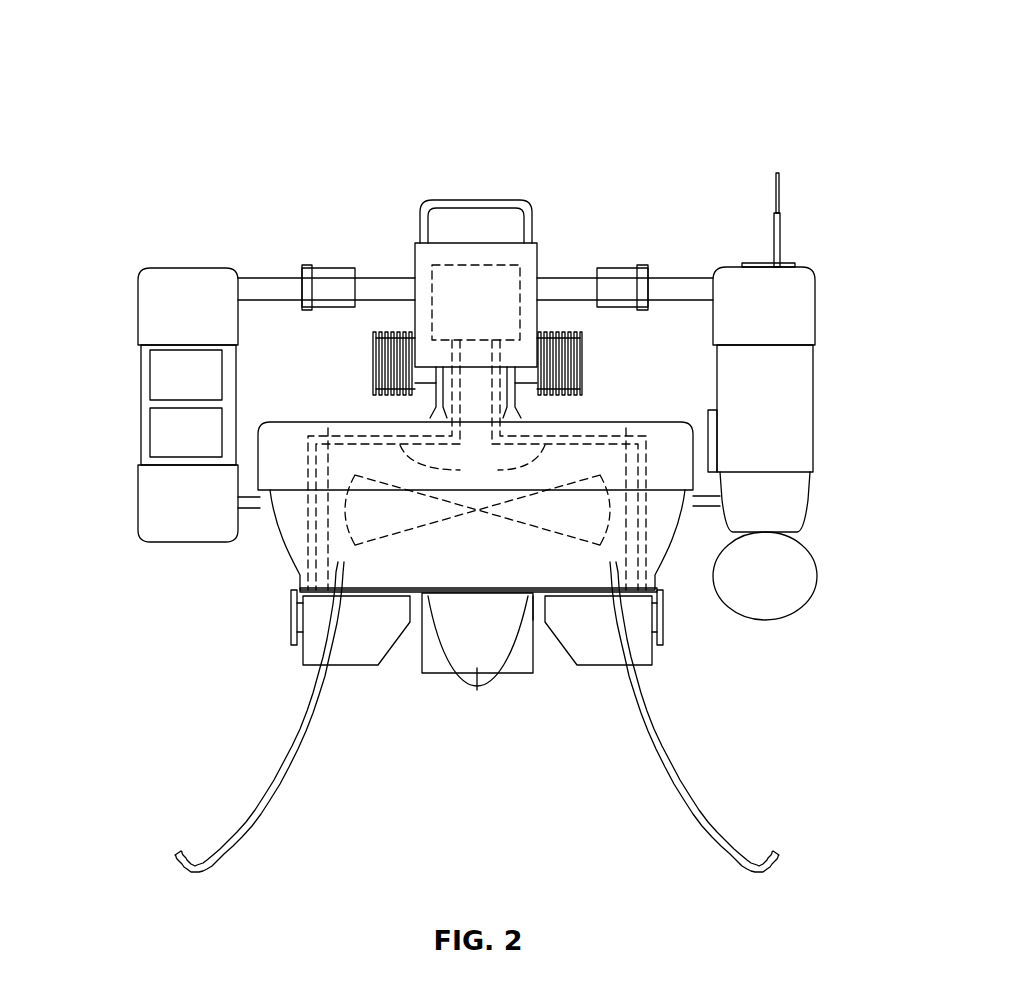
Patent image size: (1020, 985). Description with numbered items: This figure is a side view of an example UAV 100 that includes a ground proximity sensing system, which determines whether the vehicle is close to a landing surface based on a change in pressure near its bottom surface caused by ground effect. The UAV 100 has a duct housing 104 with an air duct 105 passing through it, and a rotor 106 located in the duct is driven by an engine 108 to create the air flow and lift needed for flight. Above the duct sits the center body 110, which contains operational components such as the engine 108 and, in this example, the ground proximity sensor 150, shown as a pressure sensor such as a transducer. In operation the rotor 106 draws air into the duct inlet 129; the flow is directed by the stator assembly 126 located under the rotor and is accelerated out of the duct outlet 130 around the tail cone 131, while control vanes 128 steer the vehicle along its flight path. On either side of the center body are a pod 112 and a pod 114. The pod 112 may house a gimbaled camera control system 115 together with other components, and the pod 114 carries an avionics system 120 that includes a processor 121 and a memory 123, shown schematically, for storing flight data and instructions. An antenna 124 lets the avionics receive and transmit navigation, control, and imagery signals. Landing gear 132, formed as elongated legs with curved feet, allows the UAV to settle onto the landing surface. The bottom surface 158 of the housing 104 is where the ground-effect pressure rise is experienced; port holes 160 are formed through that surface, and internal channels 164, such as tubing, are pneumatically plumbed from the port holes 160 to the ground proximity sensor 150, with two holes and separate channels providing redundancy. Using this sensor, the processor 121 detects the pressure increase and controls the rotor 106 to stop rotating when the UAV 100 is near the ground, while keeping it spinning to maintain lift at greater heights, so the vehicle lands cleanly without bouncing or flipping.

The UAV 100 is at (486, 127).
The housing 104 is at (273, 540).
The air duct 105 is at (312, 462).
The rotor 106 is at (542, 525).
The engine 108 is at (395, 353).
The center body 110 is at (424, 186).
The pod 112 is at (795, 390).
The pod 114 is at (161, 417).
The gimbaled camera control system 115 is at (795, 430).
The avionics system 120 is at (170, 460).
The processor 121 is at (186, 432).
The memory 123 is at (186, 375).
The antenna 124 is at (778, 193).
The stator assembly 126 is at (500, 740).
The control vanes 128 is at (365, 662).
The duct inlet 129 is at (406, 382).
The duct outlet 130 is at (537, 608).
The tail cone 131 is at (477, 690).
The landing gear 132 is at (292, 738).
The ground proximity sensor 150 is at (476, 330).
The bottom surface 158 is at (312, 622).
The port holes 160 is at (307, 600).
The internal channels 164 is at (472, 462).